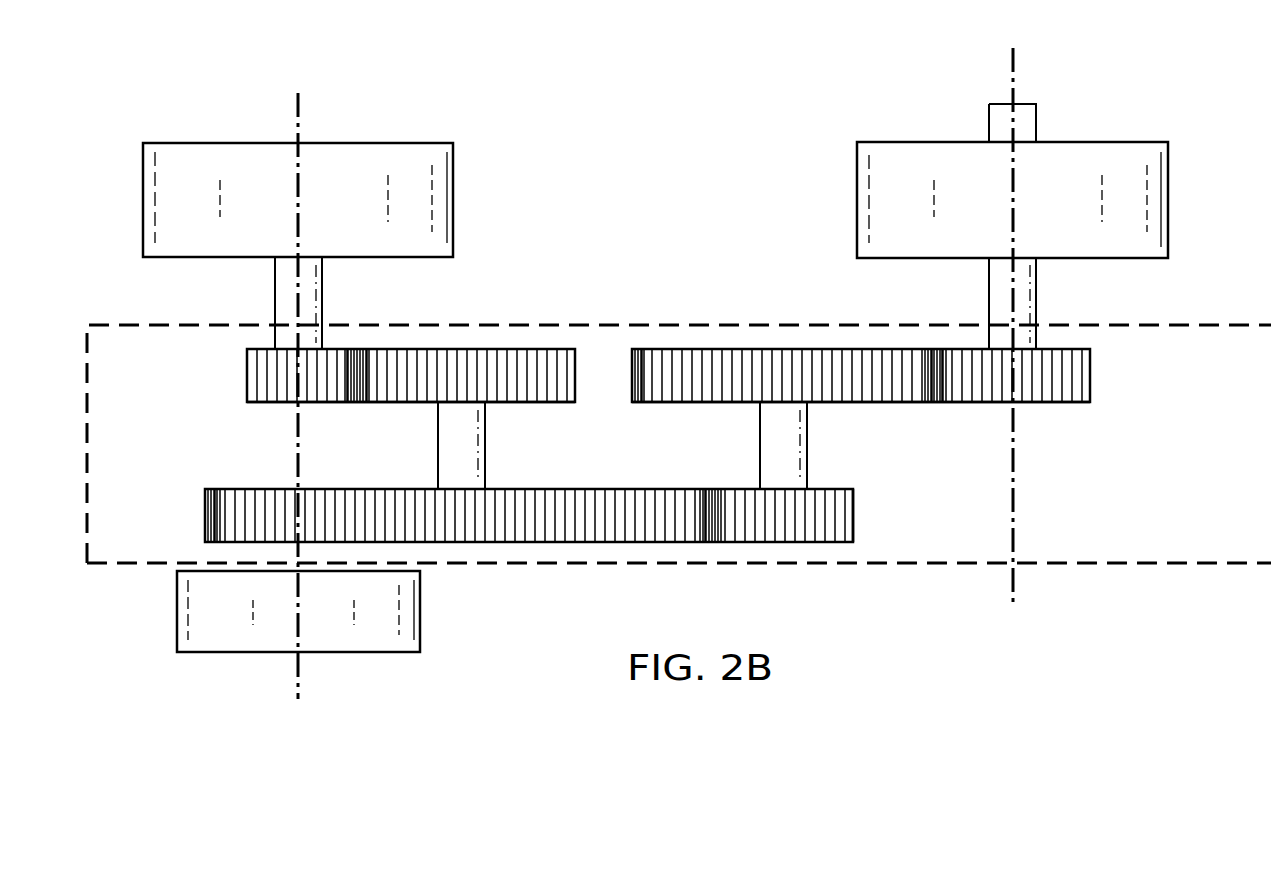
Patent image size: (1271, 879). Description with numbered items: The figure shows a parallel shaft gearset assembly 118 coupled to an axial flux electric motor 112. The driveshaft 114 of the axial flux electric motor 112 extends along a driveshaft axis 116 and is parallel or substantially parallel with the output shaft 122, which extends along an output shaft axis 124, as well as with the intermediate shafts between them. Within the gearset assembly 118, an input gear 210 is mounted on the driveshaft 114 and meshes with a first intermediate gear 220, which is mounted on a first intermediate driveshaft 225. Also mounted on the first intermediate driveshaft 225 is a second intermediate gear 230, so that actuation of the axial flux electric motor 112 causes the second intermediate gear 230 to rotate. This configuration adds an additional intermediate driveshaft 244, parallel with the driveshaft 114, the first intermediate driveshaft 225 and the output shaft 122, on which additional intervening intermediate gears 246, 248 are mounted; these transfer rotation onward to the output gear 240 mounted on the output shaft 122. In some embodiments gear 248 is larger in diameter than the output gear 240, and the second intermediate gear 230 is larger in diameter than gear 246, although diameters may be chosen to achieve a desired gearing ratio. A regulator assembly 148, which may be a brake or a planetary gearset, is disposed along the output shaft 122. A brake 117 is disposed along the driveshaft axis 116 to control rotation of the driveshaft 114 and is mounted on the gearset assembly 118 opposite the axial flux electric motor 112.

The axial flux electric motor 112 is at (143, 198).
The driveshaft 114 is at (275, 298).
The driveshaft axis 116 is at (296, 104).
The brake 117 is at (177, 615).
The gearset assembly 118 is at (739, 325).
The output shaft 122 is at (1036, 120).
The output shaft axis 124 is at (1014, 67).
The regulator assembly 148 is at (1168, 200).
The input gear 210 is at (247, 373).
The first intermediate gear 220 is at (531, 403).
The first intermediate driveshaft 225 is at (438, 447).
The second intermediate gear 230 is at (205, 517).
The output gear 240 is at (1090, 374).
The additional intermediate driveshaft 244 is at (760, 447).
The additional intermediate gear 246 is at (853, 516).
The additional intermediate gear 248 is at (876, 403).